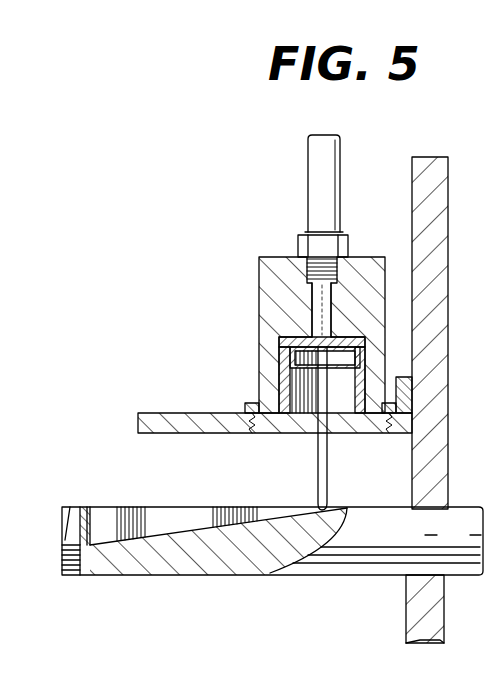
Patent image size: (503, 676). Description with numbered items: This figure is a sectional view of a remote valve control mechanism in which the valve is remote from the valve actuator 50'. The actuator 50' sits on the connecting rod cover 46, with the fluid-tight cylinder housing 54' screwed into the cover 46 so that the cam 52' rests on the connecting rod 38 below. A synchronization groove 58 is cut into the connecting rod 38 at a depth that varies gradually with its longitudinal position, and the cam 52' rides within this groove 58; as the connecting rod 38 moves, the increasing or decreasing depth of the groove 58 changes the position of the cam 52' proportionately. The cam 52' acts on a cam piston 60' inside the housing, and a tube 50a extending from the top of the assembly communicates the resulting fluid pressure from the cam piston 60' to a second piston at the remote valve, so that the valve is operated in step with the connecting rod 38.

The connecting rod 38 is at (272, 540).
The connecting rod cover 46 is at (162, 413).
The valve actuator 50' is at (302, 335).
The tube 50a is at (320, 156).
The cam 52' is at (340, 396).
The cylinder housing 54' is at (285, 248).
The synchronization groove 58 is at (111, 522).
The cam piston 60' is at (292, 375).